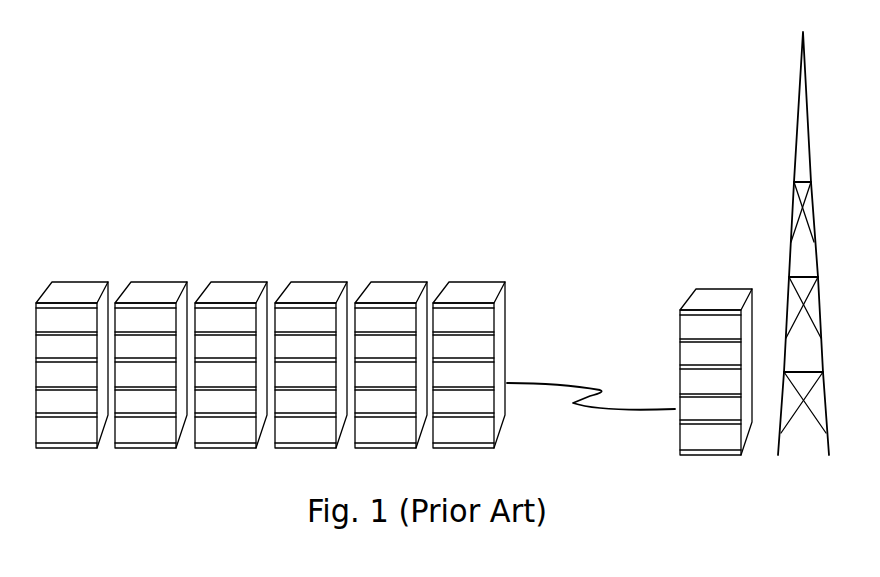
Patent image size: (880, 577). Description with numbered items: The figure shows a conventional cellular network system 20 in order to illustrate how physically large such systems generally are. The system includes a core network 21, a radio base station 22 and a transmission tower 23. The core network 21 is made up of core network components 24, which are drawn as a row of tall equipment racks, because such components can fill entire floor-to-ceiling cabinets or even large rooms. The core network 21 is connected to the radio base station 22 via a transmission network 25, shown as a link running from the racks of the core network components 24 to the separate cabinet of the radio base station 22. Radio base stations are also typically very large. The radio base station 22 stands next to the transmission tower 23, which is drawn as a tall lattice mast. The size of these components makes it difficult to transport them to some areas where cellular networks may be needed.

The cellular network system 20 is at (148, 200).
The core network 21 is at (396, 283).
The core network components 24 is at (391, 365).
The radio base station 22 is at (722, 290).
The transmission tower 23 is at (793, 207).
The transmission network 25 is at (573, 376).